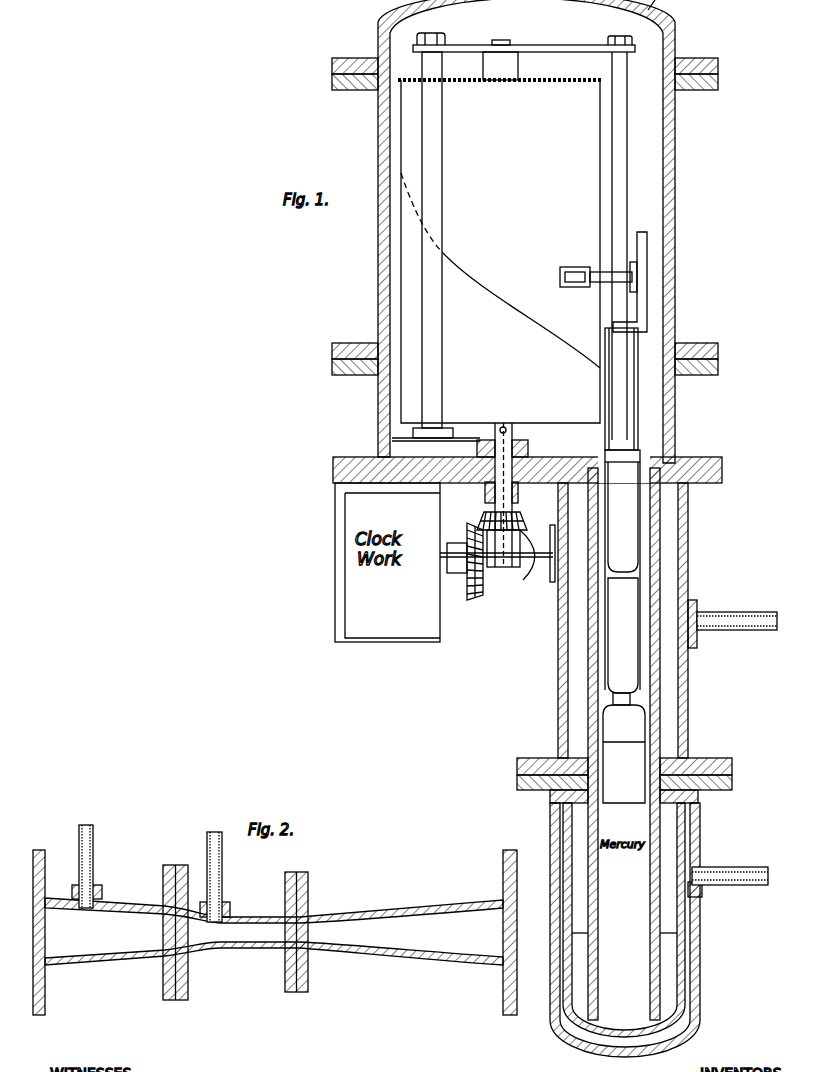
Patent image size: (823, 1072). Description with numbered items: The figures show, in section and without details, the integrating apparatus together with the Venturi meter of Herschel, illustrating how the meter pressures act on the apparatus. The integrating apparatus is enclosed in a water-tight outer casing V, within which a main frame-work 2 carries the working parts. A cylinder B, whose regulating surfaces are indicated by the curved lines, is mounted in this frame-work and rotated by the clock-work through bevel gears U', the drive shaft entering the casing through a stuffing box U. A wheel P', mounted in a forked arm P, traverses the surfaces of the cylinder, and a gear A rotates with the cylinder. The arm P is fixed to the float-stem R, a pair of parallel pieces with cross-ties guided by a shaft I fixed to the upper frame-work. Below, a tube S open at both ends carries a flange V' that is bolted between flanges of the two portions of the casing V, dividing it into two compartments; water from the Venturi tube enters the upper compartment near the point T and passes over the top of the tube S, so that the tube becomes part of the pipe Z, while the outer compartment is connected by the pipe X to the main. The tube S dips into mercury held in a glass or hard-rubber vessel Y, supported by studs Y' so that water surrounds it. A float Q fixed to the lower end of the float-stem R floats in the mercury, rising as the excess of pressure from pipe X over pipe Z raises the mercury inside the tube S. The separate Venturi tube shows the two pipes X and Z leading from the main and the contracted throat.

In FIG. 1, the main frame-work 2 is at (553, 44).
In FIG. 1, the gear A is at (545, 79).
In FIG. 1, the cylinder B is at (500, 251).
In FIG. 1, the shaft I is at (627, 162).
In FIG. 1, the forked arm P is at (608, 269).
In FIG. 1, the wheel P' is at (560, 266).
In FIG. 1, the float-stem R is at (643, 315).
In FIG. 1, the outer casing V is at (527, 379).
In FIG. 1, the flange V' is at (626, 598).
In FIG. 1, the stuffing box U is at (506, 495).
In FIG. 1, the bevel gears U' is at (497, 565).
In FIG. 1, the tube S is at (590, 519).
In FIG. 1, the point near top of tube S T is at (622, 570).
In FIG. 1, the float Q is at (624, 748).
In FIG. 1, the pipe Z is at (733, 620).
In FIG. 2, the pipe Z is at (218, 877).
In FIG. 1, the pipe X is at (728, 874).
In FIG. 2, the pipe X is at (91, 866).
In FIG. 1, the vessel Y is at (624, 920).
In FIG. 1, the studs Y' is at (626, 930).